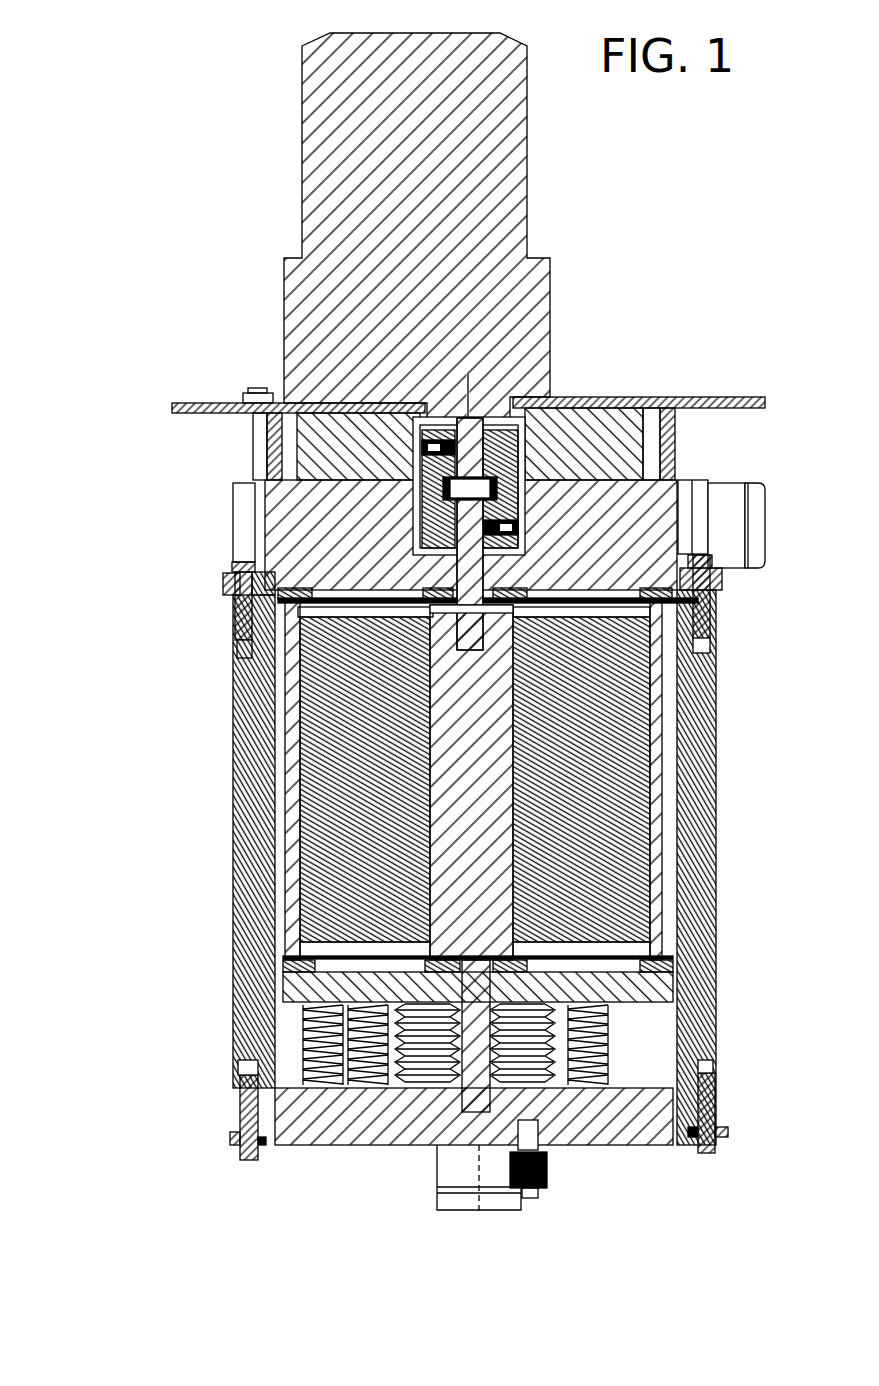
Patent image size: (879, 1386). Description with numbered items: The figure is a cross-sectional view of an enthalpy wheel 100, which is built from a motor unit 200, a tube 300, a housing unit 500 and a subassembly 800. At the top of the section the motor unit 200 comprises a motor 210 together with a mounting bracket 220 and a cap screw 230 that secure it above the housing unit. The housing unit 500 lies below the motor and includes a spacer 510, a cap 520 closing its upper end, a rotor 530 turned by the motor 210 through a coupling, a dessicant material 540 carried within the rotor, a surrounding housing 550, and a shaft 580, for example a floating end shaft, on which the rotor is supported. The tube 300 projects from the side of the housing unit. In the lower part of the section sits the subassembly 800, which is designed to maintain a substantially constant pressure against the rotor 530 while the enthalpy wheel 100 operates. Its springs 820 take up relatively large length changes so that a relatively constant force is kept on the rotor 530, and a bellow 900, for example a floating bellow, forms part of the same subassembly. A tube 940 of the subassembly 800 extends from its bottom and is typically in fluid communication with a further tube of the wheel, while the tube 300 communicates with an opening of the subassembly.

The enthalpy wheel 100 is at (612, 303).
The motor unit 200 is at (140, 22).
The motor 210 is at (443, 203).
The mounting bracket 220 is at (205, 414).
The cap screw 230 is at (263, 390).
The tube 300 is at (727, 508).
The housing unit 500 is at (140, 405).
The spacer 510 is at (593, 433).
The cap 520 is at (648, 525).
The rotor 530 is at (497, 745).
The dessicant material 540 is at (580, 790).
The housing 550 is at (698, 867).
The shaft 580 is at (480, 990).
The subassembly 800 is at (782, 1132).
The springs 820 is at (300, 1037).
The bellow 900 is at (532, 1058).
The tube 940 is at (462, 1170).